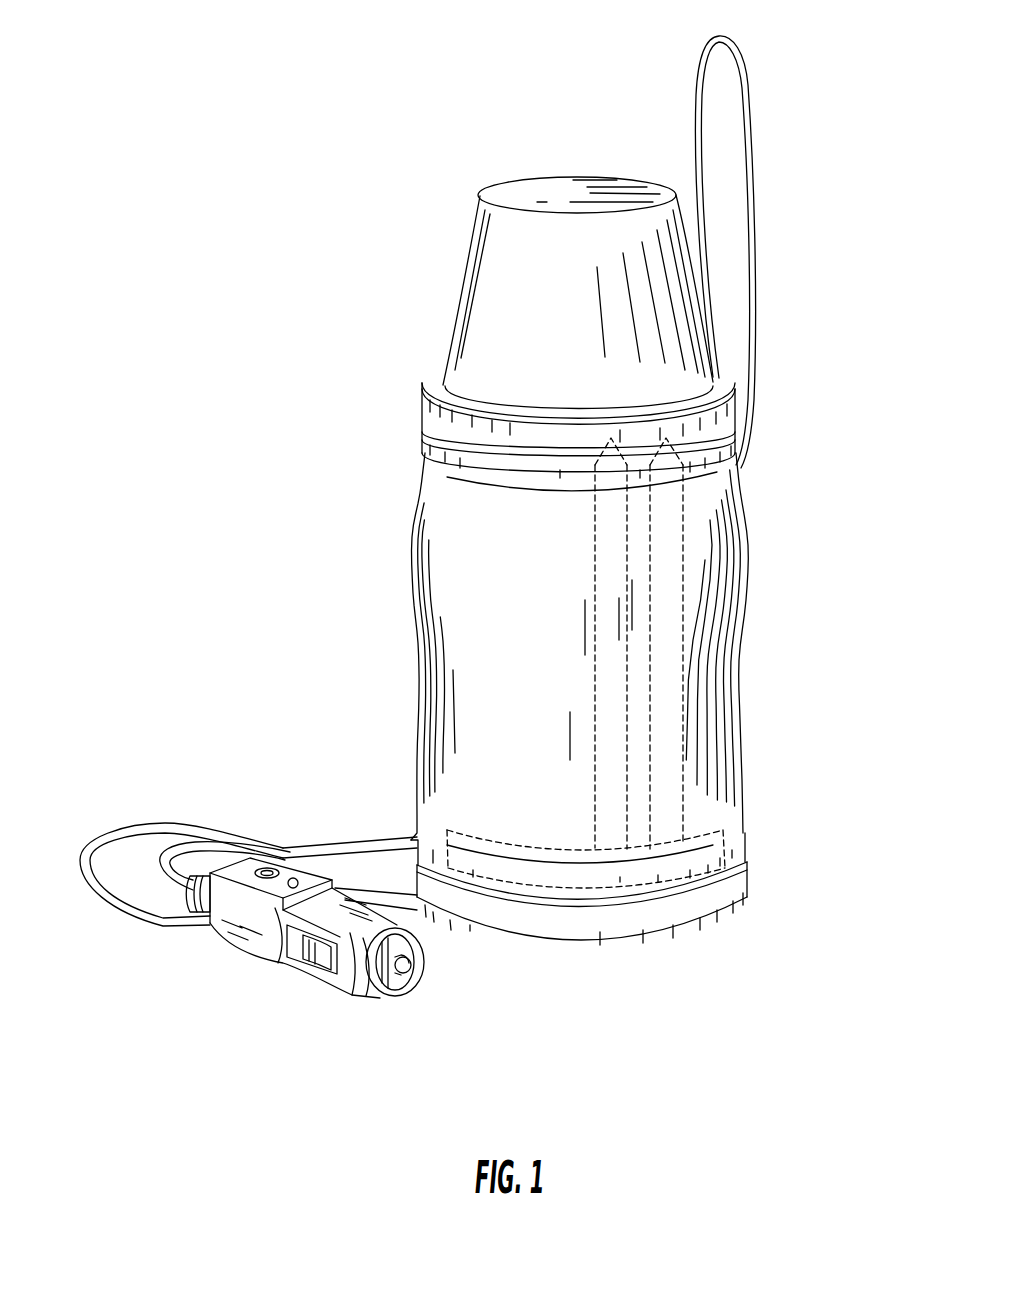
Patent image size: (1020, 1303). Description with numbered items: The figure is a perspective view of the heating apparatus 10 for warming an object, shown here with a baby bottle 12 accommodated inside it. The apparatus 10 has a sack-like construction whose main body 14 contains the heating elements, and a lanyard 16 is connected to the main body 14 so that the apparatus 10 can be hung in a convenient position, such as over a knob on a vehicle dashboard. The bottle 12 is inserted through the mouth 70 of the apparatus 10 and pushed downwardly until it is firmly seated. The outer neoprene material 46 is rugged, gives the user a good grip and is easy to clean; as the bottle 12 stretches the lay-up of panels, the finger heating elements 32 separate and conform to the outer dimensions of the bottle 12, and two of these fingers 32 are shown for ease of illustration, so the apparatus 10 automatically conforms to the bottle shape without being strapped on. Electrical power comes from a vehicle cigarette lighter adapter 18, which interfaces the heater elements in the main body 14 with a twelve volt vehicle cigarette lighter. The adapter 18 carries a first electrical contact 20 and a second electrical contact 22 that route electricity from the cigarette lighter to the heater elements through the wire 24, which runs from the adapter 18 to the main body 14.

The heating apparatus 10 is at (596, 476).
The baby bottle 12 is at (472, 232).
The main body 14 is at (722, 665).
The lanyard 16 is at (745, 70).
The vehicle cigarette lighter adapter 18 is at (340, 978).
The first electrical contact 20 is at (411, 967).
The second electrical contact 22 is at (322, 963).
The wire 24 is at (312, 845).
The finger heating elements 32 is at (615, 537).
The outer neoprene material 46 is at (690, 797).
The mouth 70 is at (455, 352).